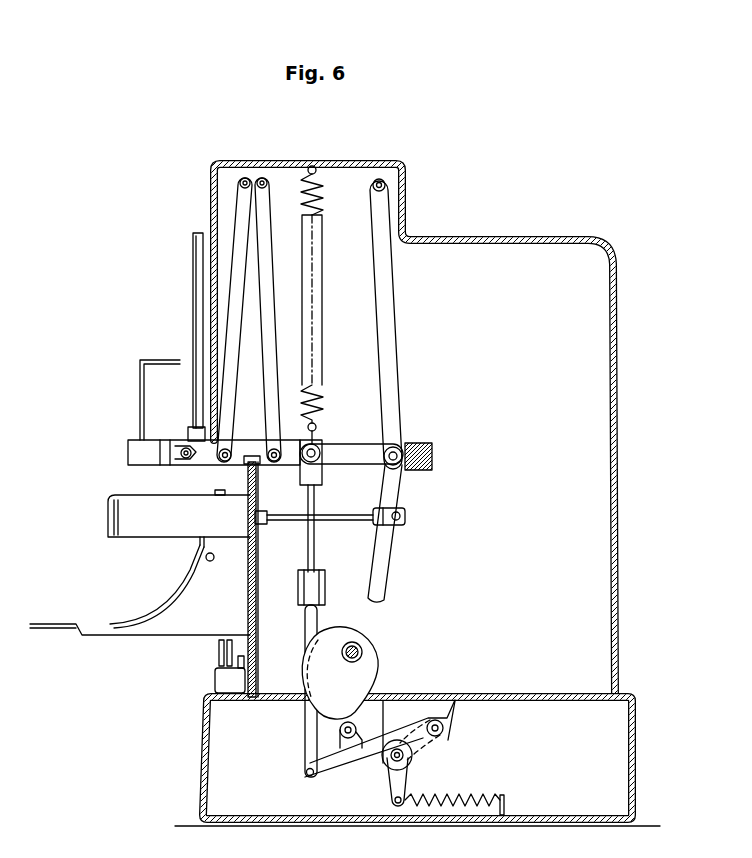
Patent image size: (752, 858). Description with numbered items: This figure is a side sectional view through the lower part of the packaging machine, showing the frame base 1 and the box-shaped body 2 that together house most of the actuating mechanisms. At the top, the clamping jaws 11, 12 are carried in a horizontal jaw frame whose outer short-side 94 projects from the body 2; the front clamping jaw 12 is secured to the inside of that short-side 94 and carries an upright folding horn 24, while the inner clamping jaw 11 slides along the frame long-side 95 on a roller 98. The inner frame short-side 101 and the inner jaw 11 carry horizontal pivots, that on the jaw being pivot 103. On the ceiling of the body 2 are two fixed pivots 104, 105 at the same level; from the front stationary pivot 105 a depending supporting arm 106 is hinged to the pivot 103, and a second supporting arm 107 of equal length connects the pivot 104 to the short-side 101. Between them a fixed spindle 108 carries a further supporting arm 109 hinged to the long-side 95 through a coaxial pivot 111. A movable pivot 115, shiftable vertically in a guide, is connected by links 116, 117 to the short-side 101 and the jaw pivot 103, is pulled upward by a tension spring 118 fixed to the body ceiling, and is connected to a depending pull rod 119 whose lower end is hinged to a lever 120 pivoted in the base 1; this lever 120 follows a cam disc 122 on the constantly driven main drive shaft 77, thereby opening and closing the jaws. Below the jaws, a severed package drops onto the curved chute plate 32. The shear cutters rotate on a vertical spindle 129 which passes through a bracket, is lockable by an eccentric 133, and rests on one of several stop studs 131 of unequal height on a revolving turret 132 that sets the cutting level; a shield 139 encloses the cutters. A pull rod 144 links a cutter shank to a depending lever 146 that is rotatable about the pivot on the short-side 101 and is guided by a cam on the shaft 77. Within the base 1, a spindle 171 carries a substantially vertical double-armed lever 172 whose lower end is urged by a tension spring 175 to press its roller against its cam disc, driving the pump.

The base 1 is at (630, 746).
The box-shaped body 2 is at (646, 504).
The inner clamping jaw 11 is at (178, 458).
The front clamping jaw 12 is at (163, 458).
The folding horn 24 is at (140, 389).
The curved plate 32 is at (42, 624).
The main drive shaft 77 is at (358, 654).
The outer frame short-side 94 is at (130, 451).
The frame long-side 95 is at (322, 472).
The roller 98 is at (188, 460).
The inner frame short-side 101 is at (412, 446).
The pivot 103 is at (226, 462).
The pivot 104 is at (382, 180).
The front stationary pivot 105 is at (247, 178).
The supporting arm 106 is at (240, 200).
The second supporting arm 107 is at (392, 298).
The fixed spindle 108 is at (263, 178).
The supporting arm 109 is at (262, 220).
The pivot 111 is at (274, 462).
The movable pivot 115 is at (316, 440).
The link 116 is at (350, 446).
The link 117 is at (260, 470).
The tension spring 118 is at (316, 308).
The pull rod 119 is at (315, 550).
The lever 120 is at (345, 762).
The cam disc 122 is at (360, 690).
The vertical spindle 129 is at (219, 650).
The stud 131 is at (255, 652).
The turret 132 is at (222, 680).
The eccentric 133 is at (206, 562).
The shield 139 is at (116, 522).
The pull rod 144 is at (376, 514).
The lever 146 is at (386, 552).
The spindle 171 is at (390, 762).
The double-armed lever 172 is at (406, 790).
The tension spring 175 is at (486, 802).